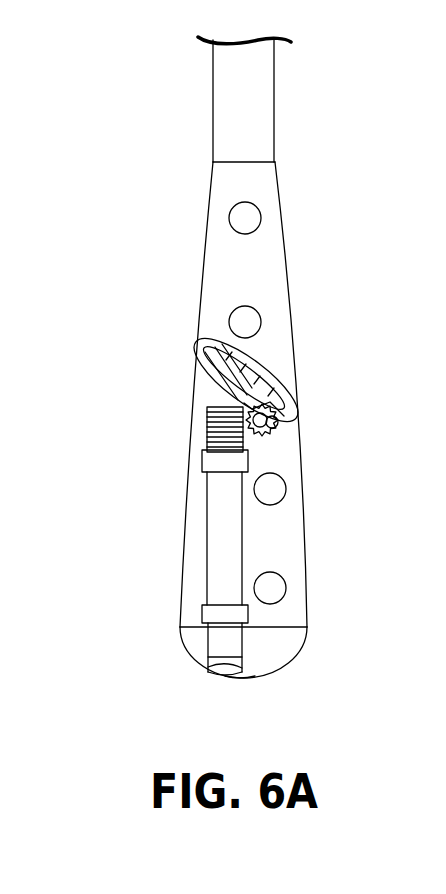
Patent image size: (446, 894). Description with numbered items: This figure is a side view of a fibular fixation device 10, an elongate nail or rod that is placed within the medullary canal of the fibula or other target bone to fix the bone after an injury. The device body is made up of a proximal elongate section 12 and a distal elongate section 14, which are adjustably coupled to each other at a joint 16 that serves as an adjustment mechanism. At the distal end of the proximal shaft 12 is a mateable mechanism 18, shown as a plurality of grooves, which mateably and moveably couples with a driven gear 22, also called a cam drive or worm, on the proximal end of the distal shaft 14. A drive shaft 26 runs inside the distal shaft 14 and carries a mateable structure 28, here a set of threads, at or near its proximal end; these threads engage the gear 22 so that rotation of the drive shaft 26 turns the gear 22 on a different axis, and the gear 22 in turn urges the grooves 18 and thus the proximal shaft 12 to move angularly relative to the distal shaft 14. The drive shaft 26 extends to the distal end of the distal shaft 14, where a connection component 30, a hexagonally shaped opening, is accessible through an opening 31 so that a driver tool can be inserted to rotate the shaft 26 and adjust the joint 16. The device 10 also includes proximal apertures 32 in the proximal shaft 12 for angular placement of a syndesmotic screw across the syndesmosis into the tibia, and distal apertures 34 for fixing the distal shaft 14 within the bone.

The fibular fixation device 10 is at (337, 83).
The proximal elongate section 12 is at (143, 167).
The distal elongate section 14 is at (102, 530).
The joint 16 is at (268, 412).
The mateable mechanism 18 is at (283, 408).
The driven gear 22 is at (258, 437).
The drive shaft 26 is at (215, 540).
The mateable structure 28 is at (207, 432).
The connection component 30 is at (225, 672).
The opening 31 is at (240, 682).
The proximal apertures 32 is at (245, 322).
The distal apertures 34 is at (270, 489).